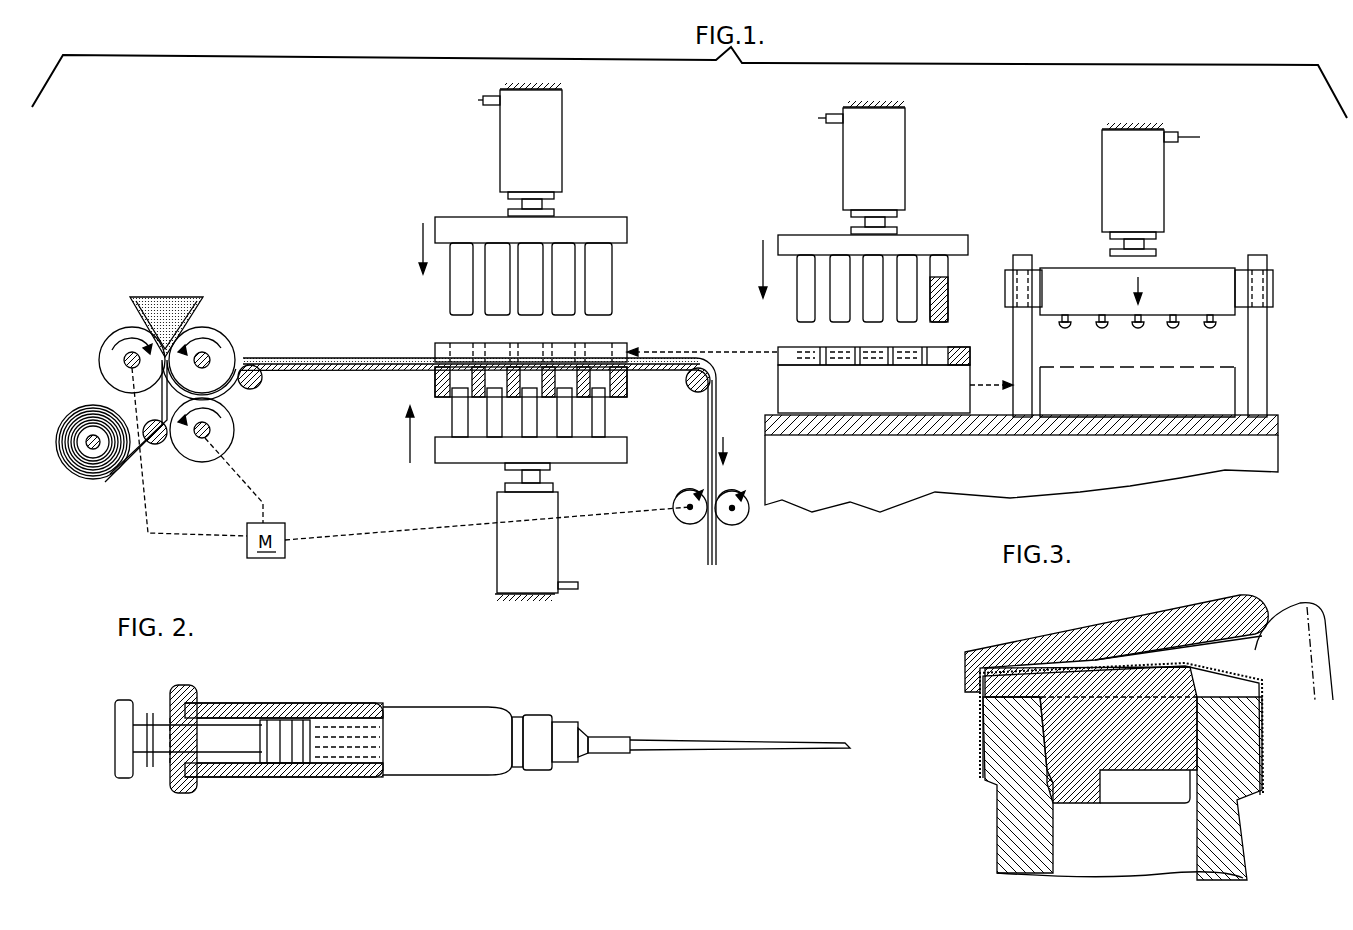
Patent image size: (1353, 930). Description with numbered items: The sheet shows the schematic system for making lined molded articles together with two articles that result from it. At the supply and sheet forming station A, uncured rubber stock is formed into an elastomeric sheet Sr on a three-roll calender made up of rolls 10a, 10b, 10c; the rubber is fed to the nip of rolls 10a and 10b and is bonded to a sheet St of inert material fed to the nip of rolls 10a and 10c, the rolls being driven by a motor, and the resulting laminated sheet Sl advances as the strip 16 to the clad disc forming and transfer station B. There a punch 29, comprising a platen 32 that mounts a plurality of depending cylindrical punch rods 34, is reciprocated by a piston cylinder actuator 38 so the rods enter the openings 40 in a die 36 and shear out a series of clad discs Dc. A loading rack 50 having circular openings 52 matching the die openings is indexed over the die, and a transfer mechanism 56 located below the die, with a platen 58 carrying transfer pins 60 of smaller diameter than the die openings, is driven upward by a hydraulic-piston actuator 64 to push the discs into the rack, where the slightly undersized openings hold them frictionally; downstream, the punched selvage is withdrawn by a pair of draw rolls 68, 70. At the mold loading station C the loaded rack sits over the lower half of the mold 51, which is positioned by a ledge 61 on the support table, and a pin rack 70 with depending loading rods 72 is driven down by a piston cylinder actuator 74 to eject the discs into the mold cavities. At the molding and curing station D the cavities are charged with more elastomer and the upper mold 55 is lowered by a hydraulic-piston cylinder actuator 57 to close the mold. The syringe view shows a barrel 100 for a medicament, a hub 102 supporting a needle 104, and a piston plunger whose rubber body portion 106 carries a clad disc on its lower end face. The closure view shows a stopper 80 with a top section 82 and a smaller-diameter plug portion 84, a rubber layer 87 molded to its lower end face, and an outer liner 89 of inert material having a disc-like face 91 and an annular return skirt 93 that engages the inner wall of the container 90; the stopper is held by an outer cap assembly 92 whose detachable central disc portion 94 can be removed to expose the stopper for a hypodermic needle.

In FIG. 1, the calender roll 10a is at (103, 352).
In FIG. 1, the forming roll 10b is at (268, 334).
In FIG. 1, the calender roll 10c is at (204, 460).
In FIG. 1, the laminated strip 16 is at (302, 364).
In FIG. 1, the punch 29 is at (662, 245).
In FIG. 1, the platen 32 is at (456, 222).
In FIG. 1, the punch rods 34 is at (497, 290).
In FIG. 1, the die 36 is at (437, 375).
In FIG. 1, the piston cylinder actuator 38 is at (543, 142).
In FIG. 1, the die openings 40 is at (452, 396).
In FIG. 1, the loading rack 50 is at (618, 343).
In FIG. 1, the mold lower half 51 is at (880, 400).
In FIG. 1, the circular openings 52 is at (505, 350).
In FIG. 1, the upper mold 55 is at (1207, 277).
In FIG. 1, the transfer mechanism 56 is at (462, 465).
In FIG. 1, the hydraulic-piston cylinder actuator 57 is at (1146, 184).
In FIG. 1, the platen 58 is at (587, 455).
In FIG. 1, the transfer pins 60 is at (560, 422).
In FIG. 1, the ledge 61 is at (770, 397).
In FIG. 1, the hydraulic-piston actuator 64 is at (536, 555).
In FIG. 1, the draw roll 68 is at (680, 520).
In FIG. 1, the draw roll / pin rack 70 is at (740, 525).
In FIG. 1, the loading rods 72 is at (842, 302).
In FIG. 1, the piston cylinder actuator 74 is at (886, 162).
In FIG. 1, the supply and sheet forming station A is at (228, 315).
In FIG. 1, the clad disc forming and transfer station B is at (608, 206).
In FIG. 1, the mold loading station C is at (950, 230).
In FIG. 1, the molding and curing station D is at (1278, 315).
In FIG. 1, the elastomeric sheet Sr is at (306, 357).
In FIG. 1, the laminated sheet Sl is at (397, 362).
In FIG. 1, the sheet of inert material St is at (250, 389).
In FIG. 1, the clad discs Dc is at (810, 348).
In FIG. 2, the barrel 100 is at (407, 708).
In FIG. 2, the hub 102 is at (542, 722).
In FIG. 2, the needle 104 is at (687, 740).
In FIG. 2, the body portion 106 is at (265, 727).
In FIG. 3, the stopper 80 is at (987, 730).
In FIG. 3, the top section 82 is at (1223, 692).
In FIG. 3, the plug portion 84 is at (1047, 738).
In FIG. 3, the layer of rubber 87 is at (1050, 777).
In FIG. 3, the outer liner 89 is at (1053, 787).
In FIG. 3, the container 90 is at (997, 860).
In FIG. 3, the disc-like face 91 is at (1128, 807).
In FIG. 3, the outer cap assembly 92 is at (1263, 730).
In FIG. 3, the annular return skirt 93 is at (1197, 803).
In FIG. 3, the detachable central disc portion 94 is at (1157, 637).